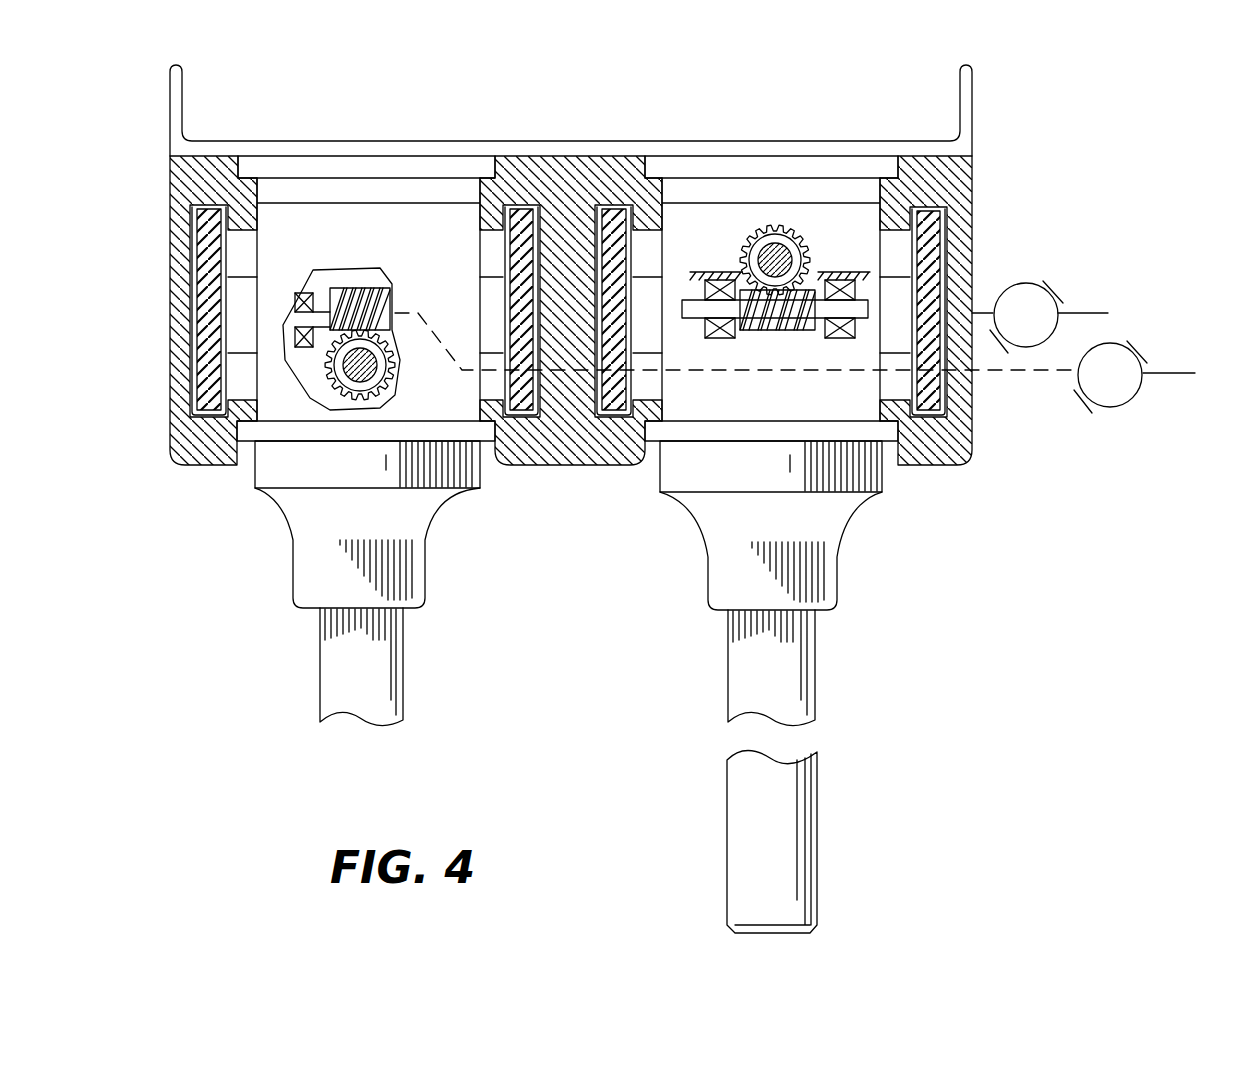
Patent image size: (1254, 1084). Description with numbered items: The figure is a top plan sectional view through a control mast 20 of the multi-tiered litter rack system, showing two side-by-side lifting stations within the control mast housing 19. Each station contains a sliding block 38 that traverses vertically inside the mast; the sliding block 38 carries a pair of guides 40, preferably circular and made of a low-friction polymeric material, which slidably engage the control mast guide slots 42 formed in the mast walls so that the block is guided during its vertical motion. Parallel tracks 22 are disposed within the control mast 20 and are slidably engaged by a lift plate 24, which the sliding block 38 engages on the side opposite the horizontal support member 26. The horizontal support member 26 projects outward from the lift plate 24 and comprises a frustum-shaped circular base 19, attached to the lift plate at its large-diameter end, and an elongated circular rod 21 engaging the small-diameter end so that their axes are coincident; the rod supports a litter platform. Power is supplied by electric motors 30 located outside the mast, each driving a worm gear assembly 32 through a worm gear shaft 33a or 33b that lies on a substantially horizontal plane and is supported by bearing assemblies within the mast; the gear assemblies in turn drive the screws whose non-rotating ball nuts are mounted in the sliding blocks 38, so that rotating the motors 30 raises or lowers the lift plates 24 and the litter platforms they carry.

The frustrum shaped circular base 19 is at (975, 192).
The control mast 20 is at (553, 141).
The elongated circular rod 21 is at (405, 658).
The track 22 is at (248, 462).
The lift plate 24 is at (412, 428).
The horizontal support member 26 is at (405, 702).
The electric motor 30 is at (1020, 283).
The worm gear assembly 32 is at (385, 400).
The worm gear shaft 33a is at (790, 338).
The worm gear shaft 33b is at (355, 290).
The sliding block 38 is at (372, 215).
The guide 40 is at (210, 262).
The control mast guide slot 42 is at (613, 205).